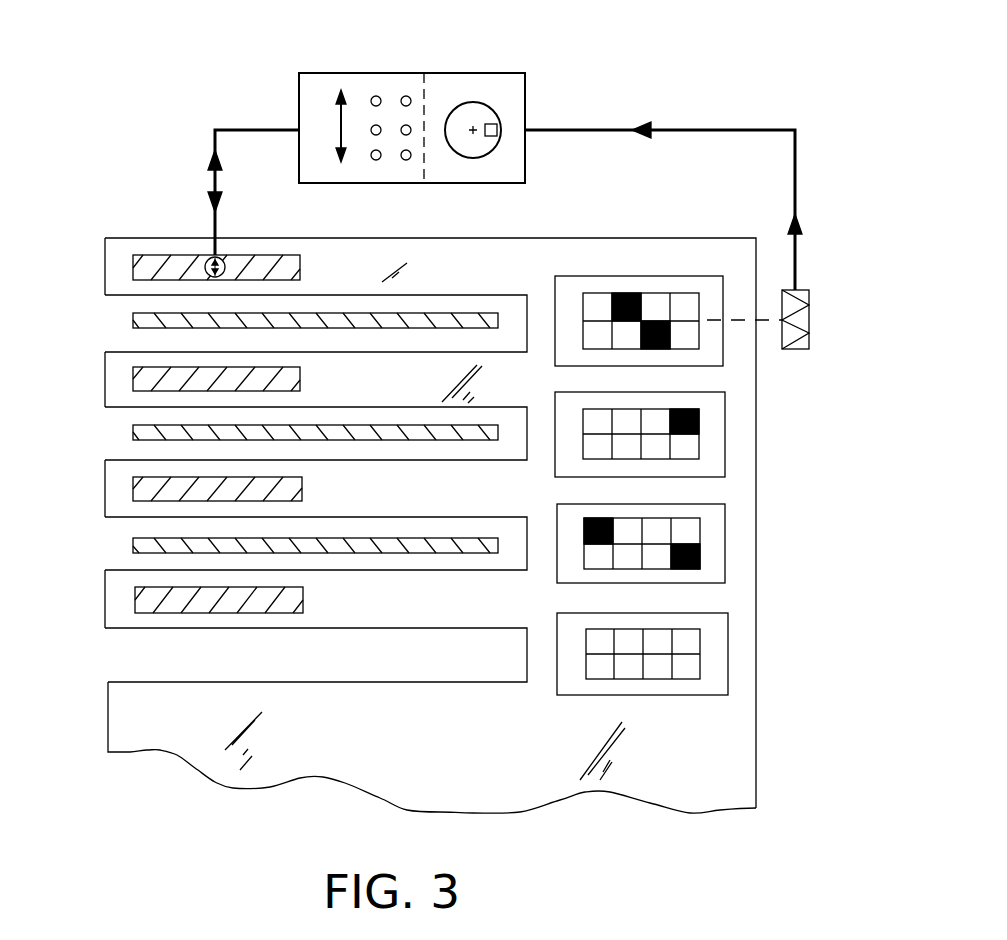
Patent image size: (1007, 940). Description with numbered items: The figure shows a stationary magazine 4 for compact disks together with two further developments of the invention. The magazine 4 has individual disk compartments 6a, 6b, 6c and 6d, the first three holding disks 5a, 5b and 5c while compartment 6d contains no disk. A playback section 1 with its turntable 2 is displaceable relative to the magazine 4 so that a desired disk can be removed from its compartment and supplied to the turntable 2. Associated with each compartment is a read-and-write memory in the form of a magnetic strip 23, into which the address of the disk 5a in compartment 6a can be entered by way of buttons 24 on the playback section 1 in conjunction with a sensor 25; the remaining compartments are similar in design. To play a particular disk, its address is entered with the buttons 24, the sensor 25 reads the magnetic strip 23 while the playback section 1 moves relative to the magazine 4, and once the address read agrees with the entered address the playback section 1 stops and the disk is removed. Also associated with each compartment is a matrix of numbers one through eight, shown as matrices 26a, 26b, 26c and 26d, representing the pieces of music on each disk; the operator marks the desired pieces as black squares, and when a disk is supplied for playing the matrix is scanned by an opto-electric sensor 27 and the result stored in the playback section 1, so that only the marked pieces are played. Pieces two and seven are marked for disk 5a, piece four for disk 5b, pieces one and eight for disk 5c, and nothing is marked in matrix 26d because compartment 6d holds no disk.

The playback section 1 is at (407, 73).
The turntable 2 is at (479, 118).
The magazine 4 is at (170, 237).
The disk 5a is at (122, 318).
The disk 5b is at (122, 427).
The disk 5c is at (122, 540).
The disk compartment 6a is at (122, 333).
The disk compartment 6b is at (112, 450).
The disk compartment 6c is at (118, 550).
The disk compartment 6d is at (115, 650).
The magnetic strip 23 is at (137, 272).
The buttons 24 is at (371, 88).
The sensor 25 is at (225, 258).
The matrix 26a is at (713, 350).
The matrix 26b is at (715, 457).
The matrix 26c is at (717, 533).
The matrix 26d is at (720, 668).
The opto-electric sensor 27 is at (814, 324).